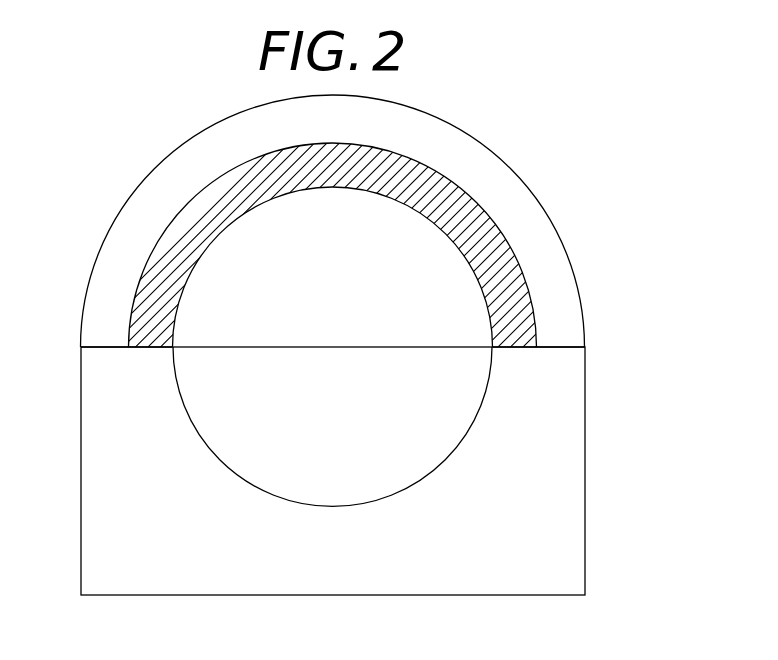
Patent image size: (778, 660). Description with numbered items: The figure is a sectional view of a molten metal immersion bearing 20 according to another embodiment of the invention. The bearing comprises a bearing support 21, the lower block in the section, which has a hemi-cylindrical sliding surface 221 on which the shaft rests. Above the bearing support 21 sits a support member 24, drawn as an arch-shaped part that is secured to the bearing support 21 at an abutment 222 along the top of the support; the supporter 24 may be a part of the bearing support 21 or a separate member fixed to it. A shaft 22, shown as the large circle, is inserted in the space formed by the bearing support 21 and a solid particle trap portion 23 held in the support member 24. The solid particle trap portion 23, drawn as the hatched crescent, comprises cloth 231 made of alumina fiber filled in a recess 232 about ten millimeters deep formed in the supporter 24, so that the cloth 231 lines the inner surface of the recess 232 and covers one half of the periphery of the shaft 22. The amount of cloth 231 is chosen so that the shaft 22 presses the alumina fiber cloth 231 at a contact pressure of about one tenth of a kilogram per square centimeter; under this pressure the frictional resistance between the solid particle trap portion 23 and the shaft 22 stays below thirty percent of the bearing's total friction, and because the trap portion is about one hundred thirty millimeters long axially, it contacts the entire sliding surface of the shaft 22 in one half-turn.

The molten metal immersion bearing 20 is at (602, 417).
The bearing support 21 is at (560, 463).
The shaft 22 is at (210, 347).
The solid particle trap portion 23 is at (510, 283).
The support member (supporter) 24 is at (142, 203).
The hemi-cylindrical sliding surface 221 is at (450, 455).
The abutment 222 is at (563, 343).
The cloth 231 is at (492, 238).
The recess 232 is at (470, 192).